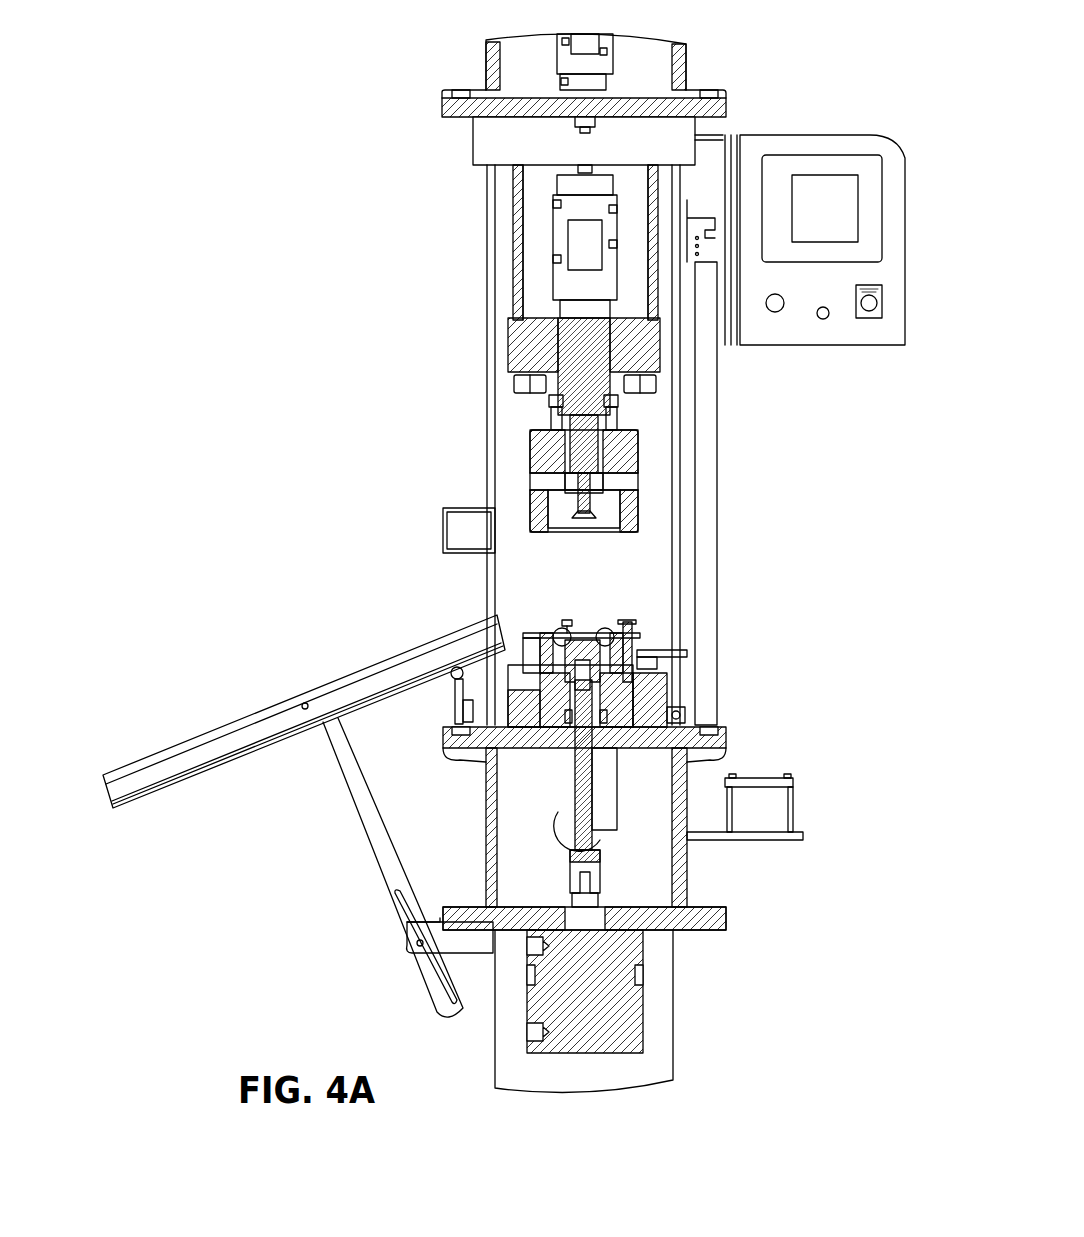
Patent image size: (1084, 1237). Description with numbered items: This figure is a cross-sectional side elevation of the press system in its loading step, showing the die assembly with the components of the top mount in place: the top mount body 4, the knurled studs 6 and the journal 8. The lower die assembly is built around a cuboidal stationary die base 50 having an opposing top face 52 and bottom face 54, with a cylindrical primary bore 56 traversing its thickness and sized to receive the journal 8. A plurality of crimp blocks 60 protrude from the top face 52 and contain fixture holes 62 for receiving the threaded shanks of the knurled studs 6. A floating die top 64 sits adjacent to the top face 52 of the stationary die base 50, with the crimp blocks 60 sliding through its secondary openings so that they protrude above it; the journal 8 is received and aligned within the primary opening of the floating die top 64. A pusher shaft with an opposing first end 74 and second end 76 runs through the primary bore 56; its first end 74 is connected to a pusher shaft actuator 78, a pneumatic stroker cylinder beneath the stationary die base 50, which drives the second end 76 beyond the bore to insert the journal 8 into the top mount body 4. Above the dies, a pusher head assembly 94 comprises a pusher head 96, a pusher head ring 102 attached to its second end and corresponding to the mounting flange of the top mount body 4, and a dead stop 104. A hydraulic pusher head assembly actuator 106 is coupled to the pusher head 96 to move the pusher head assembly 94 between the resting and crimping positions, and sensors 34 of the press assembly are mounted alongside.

The top mount body 4 is at (603, 647).
The knurled studs 6 is at (630, 663).
The journal 8 is at (573, 643).
The sensors 34 is at (760, 817).
The stationary die base 50 is at (660, 688).
The top face 52 is at (513, 657).
The bottom face 54 is at (513, 745).
The primary bore 56 is at (555, 700).
The crimp blocks 60 is at (655, 640).
The fixture holes 62 is at (653, 667).
The floating die top 64 is at (523, 637).
The first end 74 is at (573, 857).
The second end 76 is at (560, 685).
The pusher shaft actuator 78 is at (545, 997).
The pusher head assembly 94 is at (640, 477).
The pusher head 96 is at (638, 450).
The pusher head ring 102 is at (530, 496).
The dead stop 104 is at (578, 513).
The pusher head assembly actuator 106 is at (513, 290).